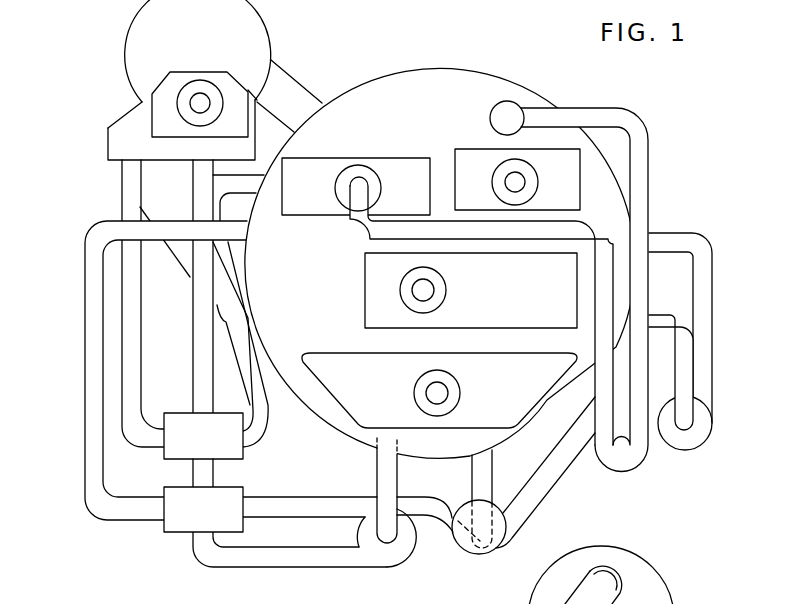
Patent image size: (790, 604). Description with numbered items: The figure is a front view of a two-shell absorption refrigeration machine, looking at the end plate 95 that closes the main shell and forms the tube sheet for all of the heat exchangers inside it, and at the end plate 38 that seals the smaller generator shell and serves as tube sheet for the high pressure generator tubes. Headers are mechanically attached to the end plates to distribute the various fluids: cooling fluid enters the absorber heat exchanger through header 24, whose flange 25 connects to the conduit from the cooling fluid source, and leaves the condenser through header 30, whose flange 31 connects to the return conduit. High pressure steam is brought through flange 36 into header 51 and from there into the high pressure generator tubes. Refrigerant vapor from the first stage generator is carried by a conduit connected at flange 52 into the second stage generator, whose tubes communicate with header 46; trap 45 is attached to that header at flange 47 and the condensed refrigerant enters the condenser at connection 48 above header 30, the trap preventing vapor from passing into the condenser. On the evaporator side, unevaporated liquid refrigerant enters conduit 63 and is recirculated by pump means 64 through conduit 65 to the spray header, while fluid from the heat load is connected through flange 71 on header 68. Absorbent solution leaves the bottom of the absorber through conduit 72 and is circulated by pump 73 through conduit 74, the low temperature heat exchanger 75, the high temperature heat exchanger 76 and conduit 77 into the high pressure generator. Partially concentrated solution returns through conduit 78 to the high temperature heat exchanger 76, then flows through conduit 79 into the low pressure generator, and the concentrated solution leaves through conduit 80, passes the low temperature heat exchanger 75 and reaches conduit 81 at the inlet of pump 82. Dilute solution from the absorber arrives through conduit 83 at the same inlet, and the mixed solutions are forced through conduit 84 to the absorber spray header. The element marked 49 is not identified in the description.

The header 24 is at (500, 408).
The flange 25 is at (413, 391).
The header 30 is at (566, 195).
The flange 31 is at (496, 174).
The flange 36 is at (197, 93).
The end plate 38 is at (206, 30).
The trap 45 is at (642, 190).
The header 46 is at (312, 207).
The flange 47 is at (357, 170).
The connection 48 is at (499, 108).
The pump 49 is at (601, 575).
The header 51 is at (163, 90).
The flange 52 is at (613, 567).
The conduit 63 is at (686, 408).
The pump means 64 is at (707, 437).
The conduit 65 is at (709, 309).
The header 68 is at (525, 306).
The flange 71 is at (446, 287).
The conduit 72 is at (366, 490).
The pump 73 is at (403, 552).
The conduit 74 is at (283, 560).
The low temperature heat exchanger 75 is at (209, 525).
The high temperature heat exchanger 76 is at (209, 453).
The conduit 77 is at (193, 377).
The conduit 78 is at (128, 190).
The conduit 79 is at (252, 443).
The conduit 80 is at (88, 422).
The conduit 81 is at (426, 497).
The pump 82 is at (467, 543).
The conduit 83 is at (486, 474).
The conduit 84 is at (546, 494).
The end plate 95 is at (300, 302).